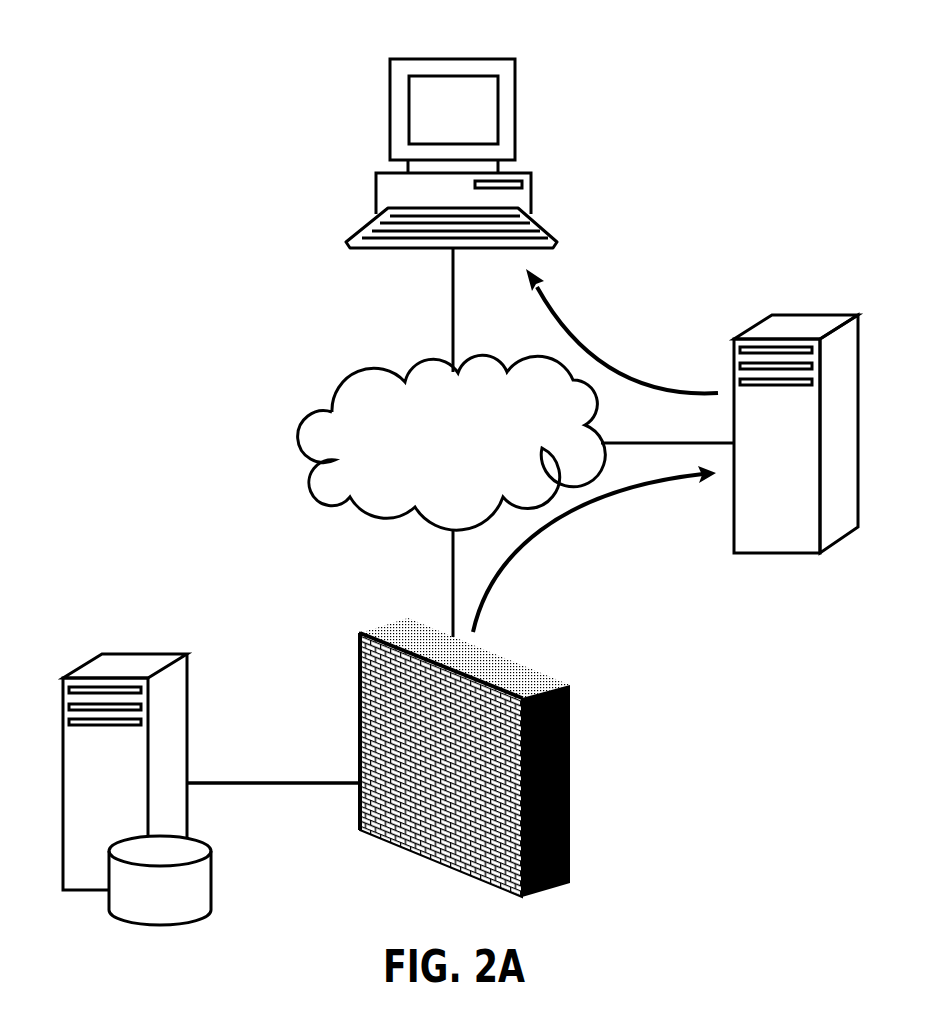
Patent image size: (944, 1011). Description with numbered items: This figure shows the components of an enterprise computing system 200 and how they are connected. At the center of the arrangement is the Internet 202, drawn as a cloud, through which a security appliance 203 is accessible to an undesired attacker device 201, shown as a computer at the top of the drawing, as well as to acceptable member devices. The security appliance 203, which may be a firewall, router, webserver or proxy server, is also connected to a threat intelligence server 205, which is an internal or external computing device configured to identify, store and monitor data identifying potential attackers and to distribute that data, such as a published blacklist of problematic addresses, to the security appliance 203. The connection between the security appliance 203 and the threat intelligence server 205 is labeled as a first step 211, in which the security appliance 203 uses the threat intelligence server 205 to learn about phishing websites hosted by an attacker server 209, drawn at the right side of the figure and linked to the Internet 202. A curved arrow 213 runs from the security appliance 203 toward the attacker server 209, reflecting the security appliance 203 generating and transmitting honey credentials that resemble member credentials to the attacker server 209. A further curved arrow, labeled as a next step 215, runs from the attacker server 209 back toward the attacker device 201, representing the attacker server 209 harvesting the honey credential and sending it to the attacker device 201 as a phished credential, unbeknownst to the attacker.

The enterprise computing system 200 is at (124, 68).
The attacker device 201 is at (451, 215).
The Internet 202 is at (452, 496).
The security appliance 203 is at (353, 650).
The threat intelligence server 205 is at (137, 789).
The attacker server 209 is at (729, 434).
The first step 211 is at (273, 764).
The request arrow from firewall to server 213 is at (594, 549).
The next step 215 is at (622, 331).